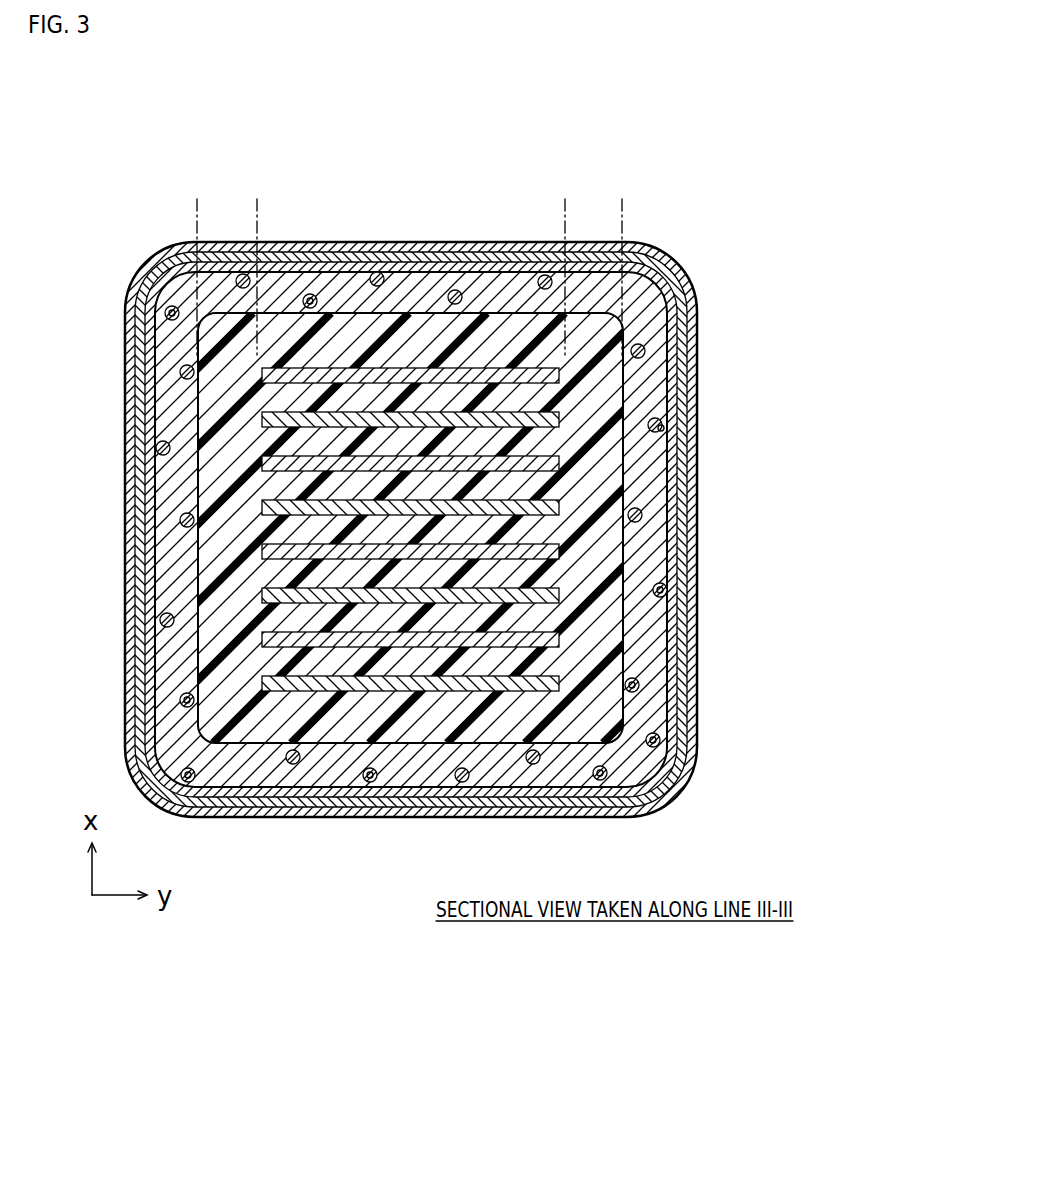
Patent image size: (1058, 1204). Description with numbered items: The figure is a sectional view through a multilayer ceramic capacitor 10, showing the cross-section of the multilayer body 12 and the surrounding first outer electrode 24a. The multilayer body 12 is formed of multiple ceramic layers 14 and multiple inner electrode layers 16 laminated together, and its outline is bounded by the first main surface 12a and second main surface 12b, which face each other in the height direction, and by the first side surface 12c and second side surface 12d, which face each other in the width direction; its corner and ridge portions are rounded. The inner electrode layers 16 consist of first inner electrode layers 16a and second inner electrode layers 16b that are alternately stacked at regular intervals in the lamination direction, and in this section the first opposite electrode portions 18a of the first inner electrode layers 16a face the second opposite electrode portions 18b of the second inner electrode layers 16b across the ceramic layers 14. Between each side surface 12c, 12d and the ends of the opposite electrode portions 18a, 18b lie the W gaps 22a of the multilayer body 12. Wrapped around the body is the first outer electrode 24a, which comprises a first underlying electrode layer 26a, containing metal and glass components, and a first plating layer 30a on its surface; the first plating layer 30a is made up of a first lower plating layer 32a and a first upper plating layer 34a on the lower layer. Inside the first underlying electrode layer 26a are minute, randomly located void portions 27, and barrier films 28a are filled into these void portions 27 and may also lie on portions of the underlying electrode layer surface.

The multilayer ceramic capacitor 10 is at (132, 206).
The multilayer body 12 is at (527, 305).
The first main surface 12a is at (285, 305).
The second main surface 12b is at (264, 744).
The first side surface 12c is at (196, 498).
The second side surface 12d is at (635, 552).
The ceramic layers 14 is at (473, 505).
The inner electrode layers 16 is at (330, 970).
The first inner electrode layers 16a is at (262, 375).
The second inner electrode layers 16b is at (559, 419).
The first opposite electrode portions 18a is at (363, 462).
The second opposite electrode portions 18b is at (508, 418).
The side portions (W gaps) 22a is at (257, 197).
The first outer electrode 24a is at (845, 265).
The first underlying electrode layer 26a is at (655, 290).
The void portions 27 is at (172, 306).
The barrier films 28a is at (312, 296).
The first plating layer 30a is at (770, 302).
The first lower plating layer 32a is at (680, 330).
The first upper plating layer 34a is at (672, 364).